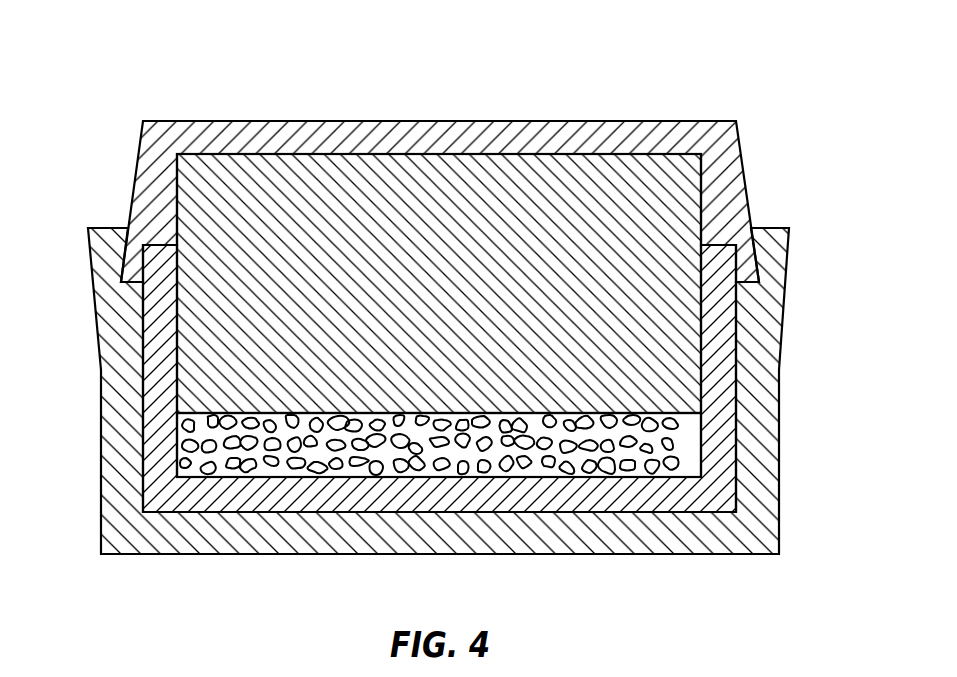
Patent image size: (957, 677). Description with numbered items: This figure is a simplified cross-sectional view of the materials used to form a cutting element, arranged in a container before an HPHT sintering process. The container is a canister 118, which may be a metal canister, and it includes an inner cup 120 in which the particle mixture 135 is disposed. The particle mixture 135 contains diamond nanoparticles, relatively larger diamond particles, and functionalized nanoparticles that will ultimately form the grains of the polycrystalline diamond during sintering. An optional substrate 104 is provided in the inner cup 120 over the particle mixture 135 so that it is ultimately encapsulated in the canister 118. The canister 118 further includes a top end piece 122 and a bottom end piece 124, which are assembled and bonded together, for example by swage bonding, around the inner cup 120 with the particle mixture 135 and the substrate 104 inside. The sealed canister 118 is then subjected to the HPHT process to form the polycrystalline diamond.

The canister 118 is at (99, 133).
The substrate 104 is at (430, 203).
The top end piece 122 is at (722, 177).
The inner cup 120 is at (715, 349).
The bottom end piece 124 is at (757, 457).
The particle mixture 135 is at (275, 460).